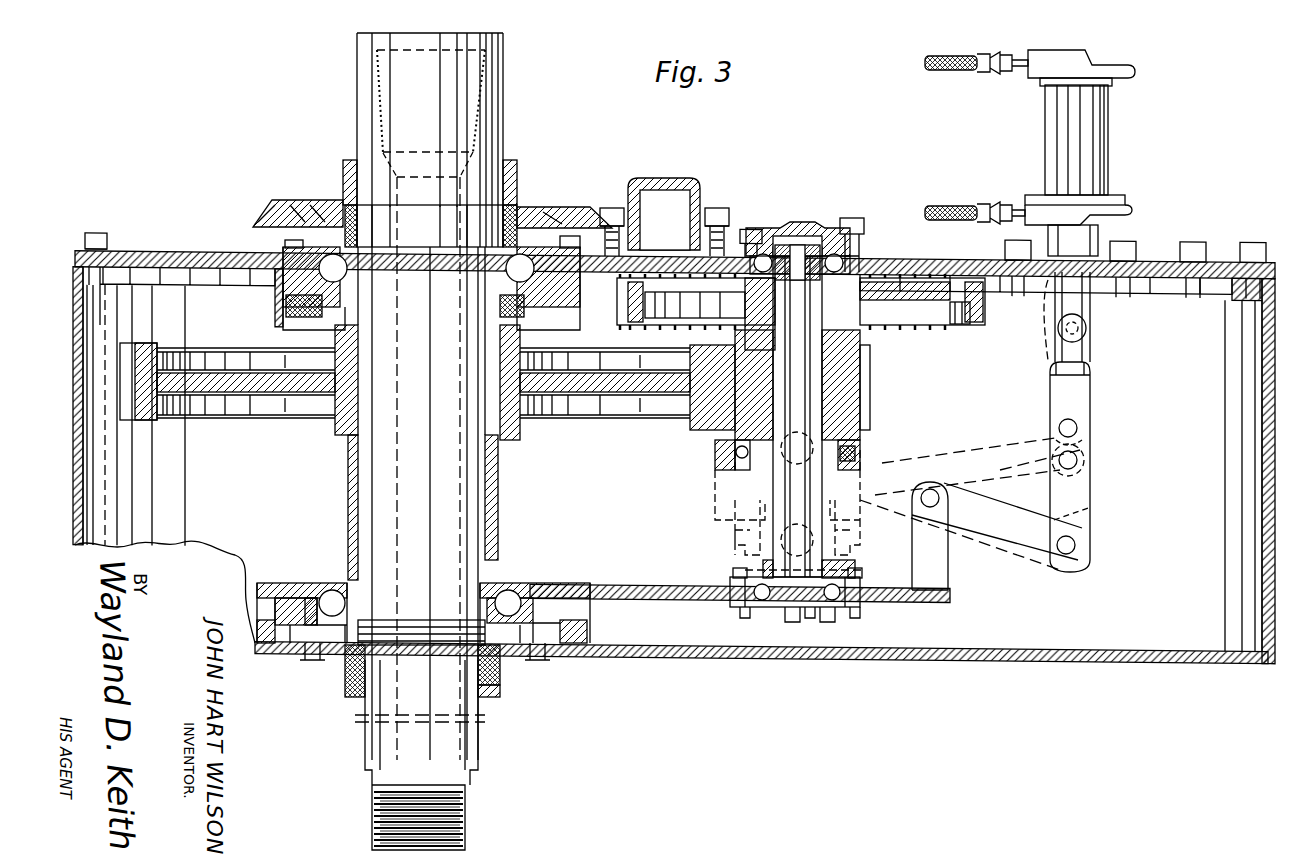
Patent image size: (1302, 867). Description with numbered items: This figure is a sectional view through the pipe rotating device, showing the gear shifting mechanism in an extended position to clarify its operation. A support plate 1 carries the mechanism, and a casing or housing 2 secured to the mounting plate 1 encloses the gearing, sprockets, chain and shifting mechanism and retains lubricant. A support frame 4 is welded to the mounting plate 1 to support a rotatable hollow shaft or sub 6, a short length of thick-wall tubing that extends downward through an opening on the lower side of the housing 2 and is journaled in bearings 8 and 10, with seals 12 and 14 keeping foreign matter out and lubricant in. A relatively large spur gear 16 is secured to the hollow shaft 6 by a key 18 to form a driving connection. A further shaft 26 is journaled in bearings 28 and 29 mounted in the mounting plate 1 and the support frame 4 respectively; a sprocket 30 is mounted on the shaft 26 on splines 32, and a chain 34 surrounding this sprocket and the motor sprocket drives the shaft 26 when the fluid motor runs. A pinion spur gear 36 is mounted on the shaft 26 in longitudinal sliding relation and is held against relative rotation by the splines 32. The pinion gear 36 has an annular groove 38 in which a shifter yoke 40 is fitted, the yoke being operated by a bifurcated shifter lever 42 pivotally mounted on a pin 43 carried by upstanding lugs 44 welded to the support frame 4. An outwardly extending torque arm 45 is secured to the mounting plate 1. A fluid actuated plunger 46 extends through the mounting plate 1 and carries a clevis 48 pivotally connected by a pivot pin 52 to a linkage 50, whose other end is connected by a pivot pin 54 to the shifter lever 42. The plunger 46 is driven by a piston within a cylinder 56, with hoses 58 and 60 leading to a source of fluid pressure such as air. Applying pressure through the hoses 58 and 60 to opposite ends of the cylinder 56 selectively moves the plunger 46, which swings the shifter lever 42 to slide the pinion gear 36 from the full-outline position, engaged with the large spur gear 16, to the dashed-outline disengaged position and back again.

The support plate 1 is at (1158, 262).
The casing or housing 2 is at (1185, 664).
The support frame 4 is at (590, 585).
The hollow shaft or sub 6 is at (470, 730).
The bearing 8 is at (325, 300).
The bearing 10 is at (332, 590).
The seal 12 is at (345, 212).
The seal 14 is at (490, 675).
The large spur gear 16 is at (126, 420).
The key 18 is at (504, 430).
The shaft 26 is at (800, 262).
The bearing 28 is at (840, 250).
The bearing 29 is at (760, 605).
The sprocket 30 is at (940, 330).
The splines 32 is at (862, 468).
The chain 34 is at (980, 314).
The pinion spur gear 36 is at (870, 390).
The annular groove 38 is at (735, 450).
The shifter yoke 40 is at (860, 450).
The bifurcated shifter lever 42 is at (990, 532).
The pin 43 is at (930, 488).
The upstanding lugs 44 is at (948, 583).
The torque arm 45 is at (645, 178).
The fluid actuated plunger 46 is at (1078, 312).
The clevis 48 is at (1082, 392).
The linkage 50 is at (1085, 494).
The pivot pin 52 is at (1080, 430).
The pivot pin 54 is at (1078, 553).
The cylinder 56 is at (1100, 157).
The hose 58 is at (946, 68).
The hose 60 is at (957, 210).